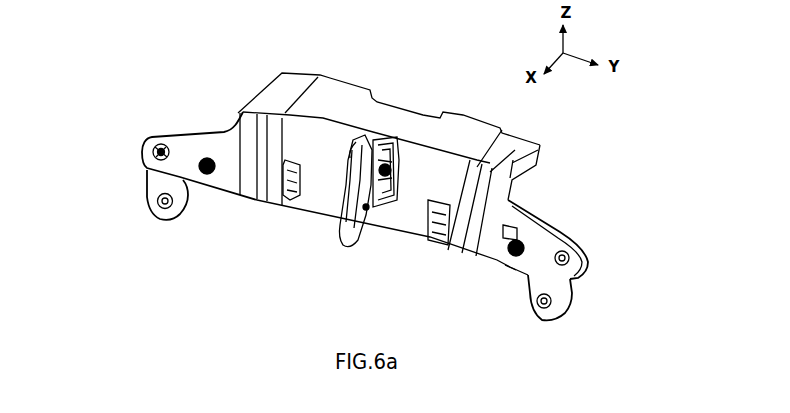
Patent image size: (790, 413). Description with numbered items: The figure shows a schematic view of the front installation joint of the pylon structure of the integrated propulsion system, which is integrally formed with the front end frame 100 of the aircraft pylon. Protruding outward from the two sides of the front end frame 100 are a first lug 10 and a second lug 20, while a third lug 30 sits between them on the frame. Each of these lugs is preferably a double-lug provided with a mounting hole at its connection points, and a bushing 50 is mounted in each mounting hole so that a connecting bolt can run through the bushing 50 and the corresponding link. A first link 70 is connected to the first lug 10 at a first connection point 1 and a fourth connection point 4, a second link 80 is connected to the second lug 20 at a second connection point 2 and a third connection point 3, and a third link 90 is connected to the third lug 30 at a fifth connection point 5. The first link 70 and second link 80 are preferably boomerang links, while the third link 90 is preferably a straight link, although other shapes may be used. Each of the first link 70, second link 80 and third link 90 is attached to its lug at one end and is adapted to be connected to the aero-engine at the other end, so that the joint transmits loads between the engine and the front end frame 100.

The first connection point 1 is at (155, 149).
The second connection point 2 is at (512, 278).
The third connection point 3 is at (571, 258).
The fourth connection point 4 is at (206, 156).
The fifth connection point 5 is at (387, 167).
The first lug 10 is at (181, 151).
The second lug 20 is at (542, 248).
The third lug 30 is at (372, 188).
The bushing 50 is at (503, 262).
The first link 70 is at (167, 212).
The second link 80 is at (533, 315).
The third link 90 is at (366, 209).
The front end frame 100 is at (460, 133).